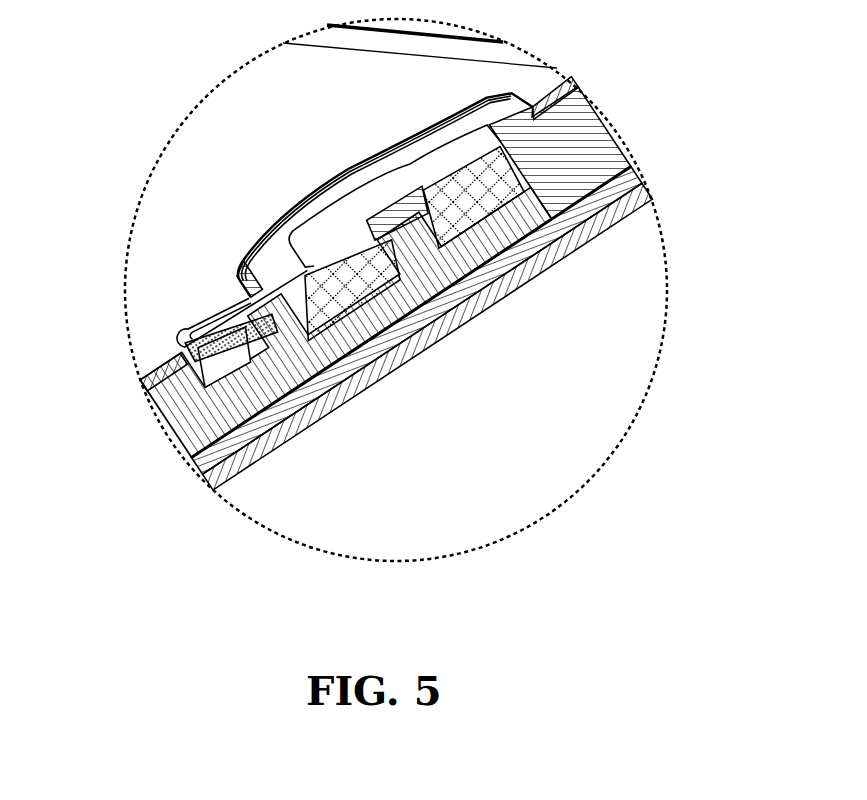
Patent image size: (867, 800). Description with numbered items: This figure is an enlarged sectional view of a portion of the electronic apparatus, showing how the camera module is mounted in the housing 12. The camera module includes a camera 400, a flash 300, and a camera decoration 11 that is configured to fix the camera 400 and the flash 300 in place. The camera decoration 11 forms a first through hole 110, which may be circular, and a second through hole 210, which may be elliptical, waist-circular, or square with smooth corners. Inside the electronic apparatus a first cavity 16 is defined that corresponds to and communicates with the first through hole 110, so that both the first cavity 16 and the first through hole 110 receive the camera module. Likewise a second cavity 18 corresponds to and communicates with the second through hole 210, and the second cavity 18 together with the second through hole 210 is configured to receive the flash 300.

The camera decoration 11 is at (380, 185).
The housing 12 is at (264, 86).
The first cavity 16 is at (386, 274).
The second cavity 18 is at (224, 355).
The first through hole 110 is at (468, 194).
The second through hole 210 is at (249, 317).
The flash 300 is at (380, 264).
The camera 400 is at (421, 328).